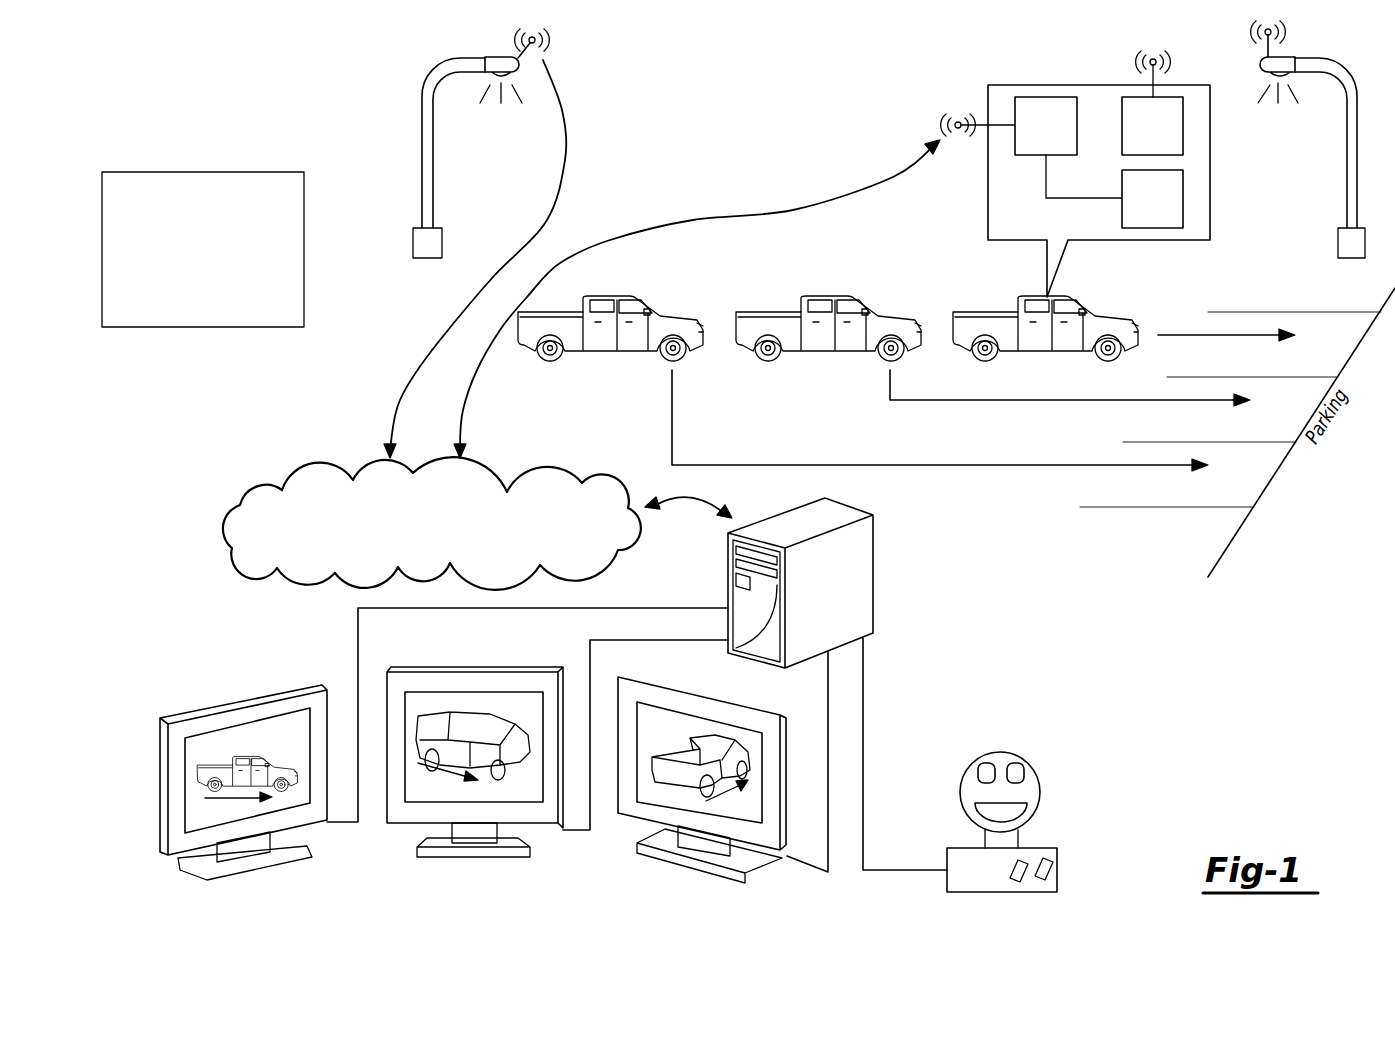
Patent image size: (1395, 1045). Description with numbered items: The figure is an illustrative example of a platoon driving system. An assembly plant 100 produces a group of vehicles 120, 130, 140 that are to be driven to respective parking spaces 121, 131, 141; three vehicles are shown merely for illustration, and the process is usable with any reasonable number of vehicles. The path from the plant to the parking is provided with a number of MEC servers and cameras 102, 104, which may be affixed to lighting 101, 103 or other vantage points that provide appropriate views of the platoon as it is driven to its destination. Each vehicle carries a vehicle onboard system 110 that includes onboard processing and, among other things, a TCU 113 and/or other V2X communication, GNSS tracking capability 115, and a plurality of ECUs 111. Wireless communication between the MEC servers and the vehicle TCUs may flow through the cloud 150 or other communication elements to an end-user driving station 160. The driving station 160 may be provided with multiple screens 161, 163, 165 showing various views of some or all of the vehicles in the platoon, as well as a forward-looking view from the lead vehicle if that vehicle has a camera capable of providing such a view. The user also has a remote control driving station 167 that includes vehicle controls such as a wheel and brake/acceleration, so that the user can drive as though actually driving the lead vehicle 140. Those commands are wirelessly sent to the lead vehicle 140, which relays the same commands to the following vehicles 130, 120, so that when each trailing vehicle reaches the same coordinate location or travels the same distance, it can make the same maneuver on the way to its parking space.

The assembly plant 100 is at (252, 211).
The lighting 101 is at (412, 244).
The MEC server and camera 102 is at (576, 54).
The lighting 103 is at (1338, 245).
The MEC server and camera 104 is at (1299, 28).
The vehicle onboard system 110 is at (1005, 228).
The ECUs 111 is at (1183, 198).
The TCU 113 is at (1047, 97).
The GNSS tracking capability 115 is at (1183, 125).
The vehicle 120 is at (668, 314).
The parking space 121 is at (1227, 490).
The vehicle 130 is at (886, 314).
The parking space 131 is at (1270, 425).
The lead vehicle 140 is at (1103, 314).
The parking space 141 is at (1310, 360).
The cloud 150 is at (414, 530).
The end-user driving station 160 is at (857, 578).
The screen 161 is at (190, 866).
The screen 163 is at (395, 826).
The screen 165 is at (628, 814).
The remote control driving station 167 is at (1040, 795).